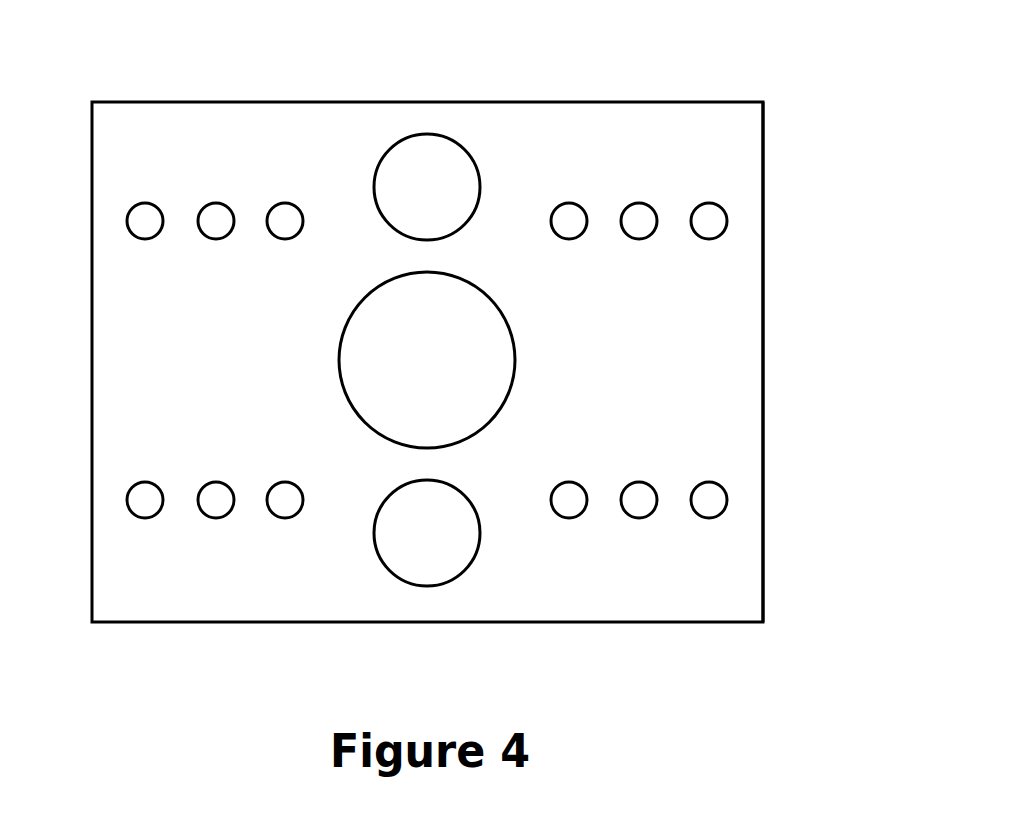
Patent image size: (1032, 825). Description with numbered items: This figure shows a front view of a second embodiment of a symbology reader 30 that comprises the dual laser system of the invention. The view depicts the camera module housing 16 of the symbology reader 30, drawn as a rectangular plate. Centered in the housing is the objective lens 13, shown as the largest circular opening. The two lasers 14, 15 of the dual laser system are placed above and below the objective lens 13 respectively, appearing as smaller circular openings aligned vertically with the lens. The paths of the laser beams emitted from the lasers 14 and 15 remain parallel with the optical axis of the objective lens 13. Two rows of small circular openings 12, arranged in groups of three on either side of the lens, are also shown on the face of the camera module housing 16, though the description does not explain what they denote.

The symbology reader 30 is at (479, 311).
The camera module housing 16 is at (806, 361).
The laser 14 is at (469, 138).
The objective lens 13 is at (494, 242).
The laser 15 is at (472, 580).
The fastener holes 12 is at (476, 389).